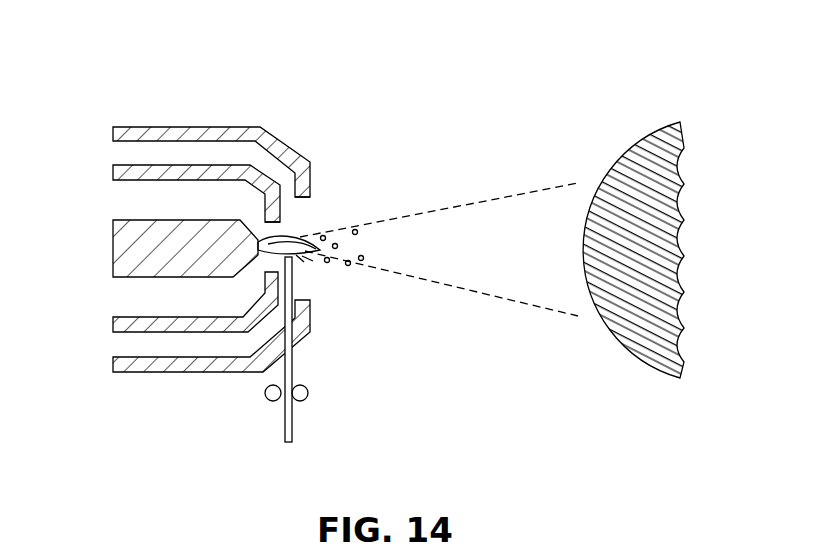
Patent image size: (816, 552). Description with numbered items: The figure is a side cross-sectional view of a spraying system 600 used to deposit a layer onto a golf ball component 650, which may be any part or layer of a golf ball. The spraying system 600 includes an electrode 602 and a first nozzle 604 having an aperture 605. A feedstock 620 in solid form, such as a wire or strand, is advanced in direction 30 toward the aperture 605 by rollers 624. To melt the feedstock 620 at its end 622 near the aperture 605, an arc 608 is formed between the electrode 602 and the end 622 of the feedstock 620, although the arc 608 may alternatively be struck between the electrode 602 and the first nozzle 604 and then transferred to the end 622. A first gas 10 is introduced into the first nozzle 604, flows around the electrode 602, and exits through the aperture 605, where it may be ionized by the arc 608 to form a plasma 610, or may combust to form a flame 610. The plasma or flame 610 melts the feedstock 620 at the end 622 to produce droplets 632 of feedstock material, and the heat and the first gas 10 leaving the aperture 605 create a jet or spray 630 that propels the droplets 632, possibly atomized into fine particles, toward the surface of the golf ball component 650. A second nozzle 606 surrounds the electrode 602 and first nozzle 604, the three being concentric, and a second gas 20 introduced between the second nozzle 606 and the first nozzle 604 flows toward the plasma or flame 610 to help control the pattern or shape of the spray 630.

The spraying system 600 is at (137, 58).
The electrode 602 is at (113, 240).
The first nozzle 604 is at (134, 171).
The aperture 605 is at (262, 223).
The second nozzle 606 is at (244, 130).
The arc 608 is at (255, 270).
The plasma or flame 610 is at (296, 232).
The feedstock 620 is at (292, 424).
The end of feedstock 622 is at (291, 262).
The rollers 624 is at (265, 396).
The jet or spray 630 is at (527, 188).
The droplets 632 is at (357, 229).
The golf ball component 650 is at (678, 191).
The second gas 20 is at (98, 153).
The first gas 10 is at (98, 200).
The direction 30 is at (285, 456).